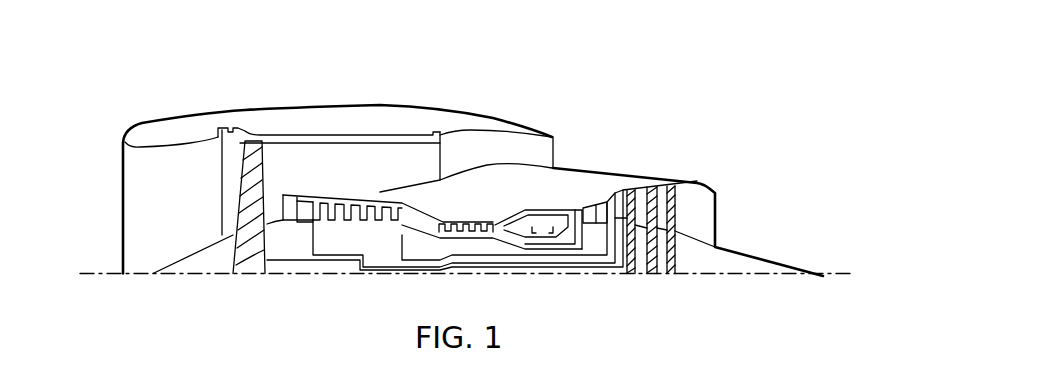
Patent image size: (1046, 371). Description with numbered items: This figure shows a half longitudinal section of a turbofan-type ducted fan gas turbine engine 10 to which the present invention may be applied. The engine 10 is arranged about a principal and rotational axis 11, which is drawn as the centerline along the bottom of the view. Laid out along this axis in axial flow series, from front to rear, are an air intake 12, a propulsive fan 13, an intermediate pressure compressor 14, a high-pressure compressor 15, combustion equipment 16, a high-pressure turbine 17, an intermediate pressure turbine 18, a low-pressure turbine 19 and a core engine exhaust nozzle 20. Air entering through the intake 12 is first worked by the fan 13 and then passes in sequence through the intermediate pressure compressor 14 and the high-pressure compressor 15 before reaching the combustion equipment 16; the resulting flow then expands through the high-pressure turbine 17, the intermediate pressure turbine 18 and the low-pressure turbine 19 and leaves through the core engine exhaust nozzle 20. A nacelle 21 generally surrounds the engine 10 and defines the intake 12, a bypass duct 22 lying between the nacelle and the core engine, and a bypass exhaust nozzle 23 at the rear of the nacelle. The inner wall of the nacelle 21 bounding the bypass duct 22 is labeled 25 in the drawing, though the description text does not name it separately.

The ducted fan gas turbine engine 10 is at (672, 66).
The principal and rotational axis 11 is at (110, 272).
The air intake 12 is at (137, 147).
The propulsive fan 13 is at (250, 147).
The intermediate pressure compressor 14 is at (357, 197).
The high-pressure compressor 15 is at (462, 222).
The combustion equipment 16 is at (525, 222).
The high-pressure turbine 17 is at (575, 210).
The intermediate pressure turbine 18 is at (610, 202).
The low-pressure turbine 19 is at (650, 188).
The core engine exhaust nozzle 20 is at (703, 193).
The nacelle 21 is at (188, 125).
The bypass duct 22 is at (385, 158).
The bypass exhaust nozzle 23 is at (553, 137).
The inner nacelle wall 25 is at (487, 162).